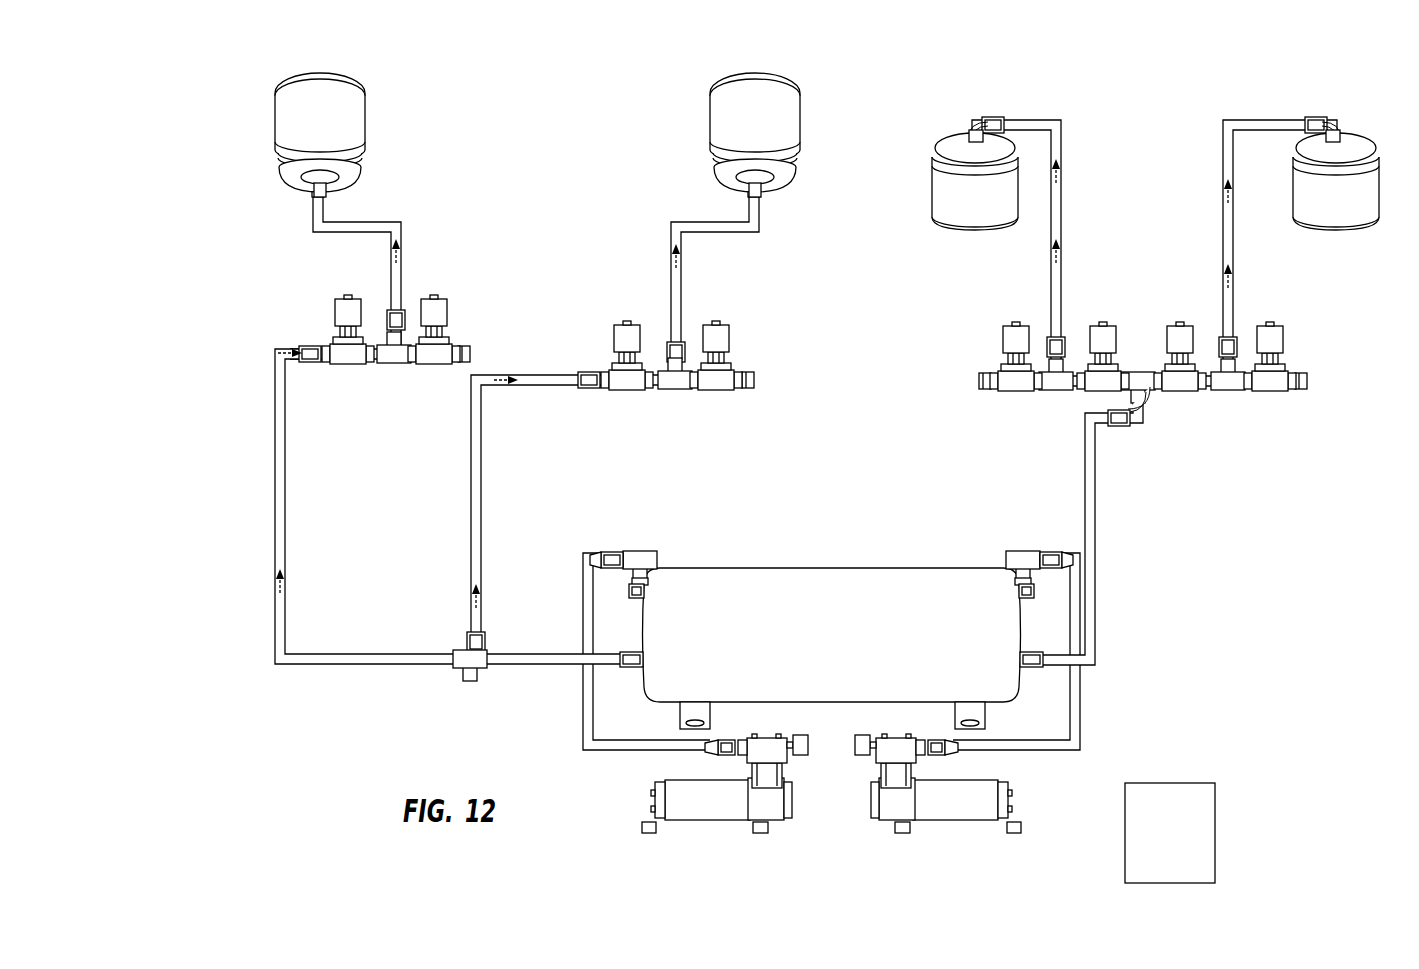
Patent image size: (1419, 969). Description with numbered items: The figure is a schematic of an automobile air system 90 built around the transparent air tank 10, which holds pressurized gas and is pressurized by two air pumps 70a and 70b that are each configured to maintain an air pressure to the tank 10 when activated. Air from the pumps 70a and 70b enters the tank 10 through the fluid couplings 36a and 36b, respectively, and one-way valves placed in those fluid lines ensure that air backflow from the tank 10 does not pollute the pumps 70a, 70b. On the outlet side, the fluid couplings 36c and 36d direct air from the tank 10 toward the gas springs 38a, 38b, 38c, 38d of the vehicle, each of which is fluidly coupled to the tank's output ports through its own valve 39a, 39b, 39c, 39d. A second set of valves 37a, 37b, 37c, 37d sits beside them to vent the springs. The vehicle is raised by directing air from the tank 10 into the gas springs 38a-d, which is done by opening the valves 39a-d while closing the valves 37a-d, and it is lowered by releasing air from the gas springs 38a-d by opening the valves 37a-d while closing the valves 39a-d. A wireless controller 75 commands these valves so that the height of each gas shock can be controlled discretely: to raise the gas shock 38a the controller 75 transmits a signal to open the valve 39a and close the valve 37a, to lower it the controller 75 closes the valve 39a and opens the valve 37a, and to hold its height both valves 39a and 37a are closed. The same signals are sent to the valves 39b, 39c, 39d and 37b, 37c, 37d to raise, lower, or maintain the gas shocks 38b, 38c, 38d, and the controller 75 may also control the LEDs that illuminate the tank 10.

The transparent tank 10 is at (832, 648).
The fluid coupling 36a is at (588, 570).
The fluid coupling 36b is at (1086, 585).
The fluid coupling 36c is at (620, 731).
The fluid coupling 36d is at (1051, 731).
The valve 37a is at (450, 306).
The valve 37b is at (733, 332).
The valve 37c is at (1002, 333).
The valve 37d is at (1288, 333).
The gas spring 38a is at (332, 103).
The gas spring 38b is at (767, 103).
The gas spring 38c is at (961, 213).
The gas spring 38d is at (1356, 213).
The valve 39a is at (312, 318).
The valve 39b is at (592, 345).
The valve 39c is at (1111, 323).
The valve 39d is at (1189, 323).
The air pump 70a is at (725, 812).
The air pump 70b is at (938, 812).
The controller 75 is at (1209, 833).
The air suspension system 90 is at (133, 160).